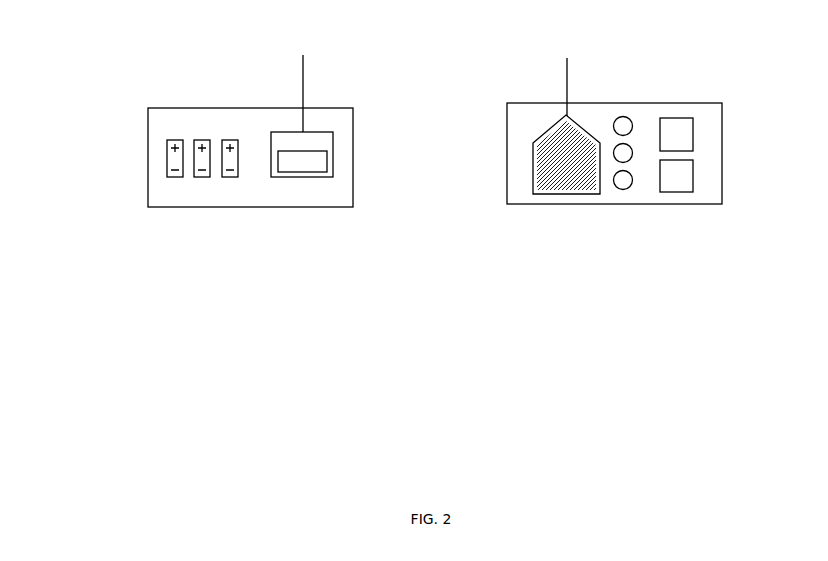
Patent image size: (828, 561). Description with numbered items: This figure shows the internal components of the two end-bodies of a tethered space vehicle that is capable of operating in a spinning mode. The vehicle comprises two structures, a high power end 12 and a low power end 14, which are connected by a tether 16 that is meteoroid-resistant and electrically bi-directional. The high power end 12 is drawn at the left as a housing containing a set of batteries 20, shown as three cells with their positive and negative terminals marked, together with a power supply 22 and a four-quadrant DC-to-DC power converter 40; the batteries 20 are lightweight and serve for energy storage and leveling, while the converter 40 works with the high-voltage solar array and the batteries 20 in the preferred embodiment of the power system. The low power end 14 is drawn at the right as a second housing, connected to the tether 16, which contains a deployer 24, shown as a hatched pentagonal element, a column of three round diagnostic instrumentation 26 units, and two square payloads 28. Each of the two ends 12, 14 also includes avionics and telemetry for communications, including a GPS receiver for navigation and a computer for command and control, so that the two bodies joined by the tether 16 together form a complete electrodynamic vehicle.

The high power end 12 is at (137, 157).
The low power end 14 is at (722, 154).
The tether 16 is at (570, 72).
The batteries 20 is at (174, 180).
The power supply 22 is at (303, 80).
The deployer 24 is at (566, 194).
The diagnostic instrumentation 26 is at (623, 190).
The payloads 28 is at (677, 192).
The four-quadrant DC-to-DC power converter 40 is at (303, 172).